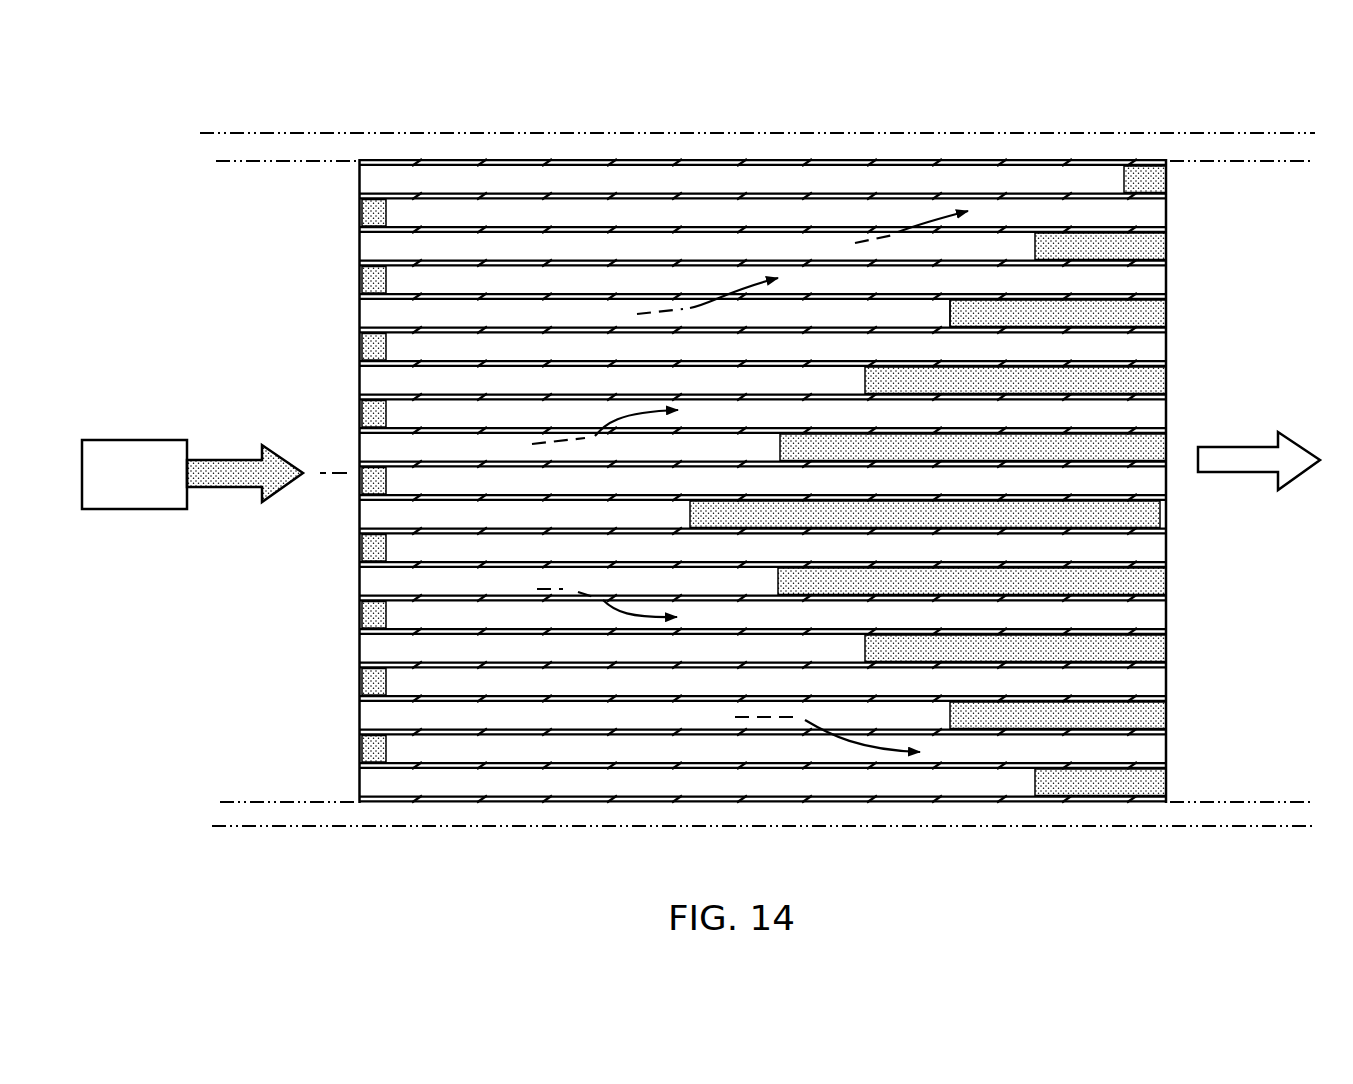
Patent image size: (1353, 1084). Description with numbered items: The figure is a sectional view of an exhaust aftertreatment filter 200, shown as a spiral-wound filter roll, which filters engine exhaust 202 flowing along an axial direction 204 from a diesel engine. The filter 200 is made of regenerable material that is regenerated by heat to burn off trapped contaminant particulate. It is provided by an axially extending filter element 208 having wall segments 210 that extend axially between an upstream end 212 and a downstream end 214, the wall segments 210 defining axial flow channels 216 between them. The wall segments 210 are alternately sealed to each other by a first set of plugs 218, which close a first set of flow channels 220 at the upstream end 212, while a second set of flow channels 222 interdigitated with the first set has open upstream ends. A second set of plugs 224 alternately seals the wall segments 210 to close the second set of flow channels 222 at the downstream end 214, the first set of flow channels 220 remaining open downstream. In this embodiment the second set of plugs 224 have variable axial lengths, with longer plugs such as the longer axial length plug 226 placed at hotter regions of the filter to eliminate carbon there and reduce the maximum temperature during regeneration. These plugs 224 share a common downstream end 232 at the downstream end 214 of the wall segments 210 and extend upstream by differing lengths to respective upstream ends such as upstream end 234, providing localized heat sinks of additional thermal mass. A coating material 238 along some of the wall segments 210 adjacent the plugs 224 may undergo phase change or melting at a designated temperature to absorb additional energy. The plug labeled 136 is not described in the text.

The outlet plug 136 is at (865, 378).
The exhaust aftertreatment filter 200 is at (318, 242).
The engine exhaust 202 is at (226, 488).
The axial direction 204 is at (318, 472).
The filter element 208 is at (504, 158).
The wall segments 210 is at (597, 260).
The upstream end 212 is at (358, 262).
The downstream end 214 is at (1168, 230).
The axial flow channels 216 is at (677, 248).
The first set of plugs 218 is at (402, 347).
The first set of flow channels 220 is at (402, 405).
The second set of flow channels 222 is at (362, 472).
The second set of plugs 224 is at (976, 441).
The longer axial length plug 226 is at (1102, 517).
The downstream end of plug 232 is at (1152, 315).
The upstream end of plug 234 is at (950, 315).
The coating material 238 is at (1115, 607).